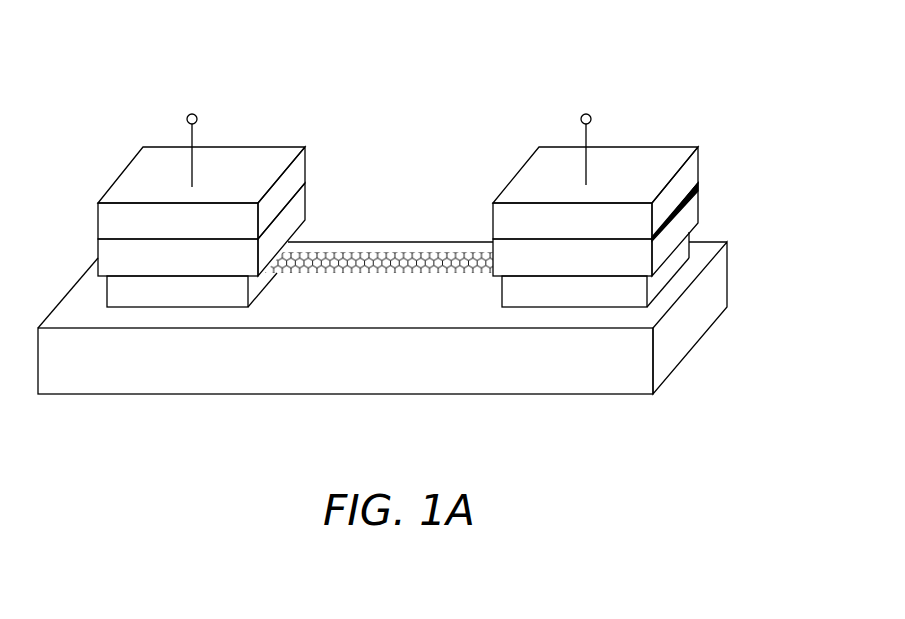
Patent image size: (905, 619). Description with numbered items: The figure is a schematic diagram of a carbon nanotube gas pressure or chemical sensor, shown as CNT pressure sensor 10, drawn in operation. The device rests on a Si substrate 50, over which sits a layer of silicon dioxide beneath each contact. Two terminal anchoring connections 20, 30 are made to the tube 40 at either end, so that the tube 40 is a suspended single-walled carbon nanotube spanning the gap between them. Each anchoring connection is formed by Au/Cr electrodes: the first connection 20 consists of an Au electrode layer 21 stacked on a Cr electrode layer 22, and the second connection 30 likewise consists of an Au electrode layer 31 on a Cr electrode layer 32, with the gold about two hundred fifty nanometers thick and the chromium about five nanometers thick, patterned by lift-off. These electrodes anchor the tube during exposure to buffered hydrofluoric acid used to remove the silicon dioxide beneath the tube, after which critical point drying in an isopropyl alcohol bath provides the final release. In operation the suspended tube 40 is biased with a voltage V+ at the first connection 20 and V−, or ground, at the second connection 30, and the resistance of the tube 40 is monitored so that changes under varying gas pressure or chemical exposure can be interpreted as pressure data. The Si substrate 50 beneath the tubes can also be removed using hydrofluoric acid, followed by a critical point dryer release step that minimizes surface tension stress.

The CNT pressure sensor 10 is at (410, 261).
The terminal anchoring connection 20 is at (204, 196).
The Au electrode layer 21 is at (307, 169).
The Cr electrode layer 22 is at (305, 203).
The terminal anchoring connection 30 is at (638, 169).
The Au electrode layer 31 is at (698, 166).
The Cr electrode layer 32 is at (698, 203).
The tube 40 is at (398, 243).
The Si substrate 50 is at (197, 393).